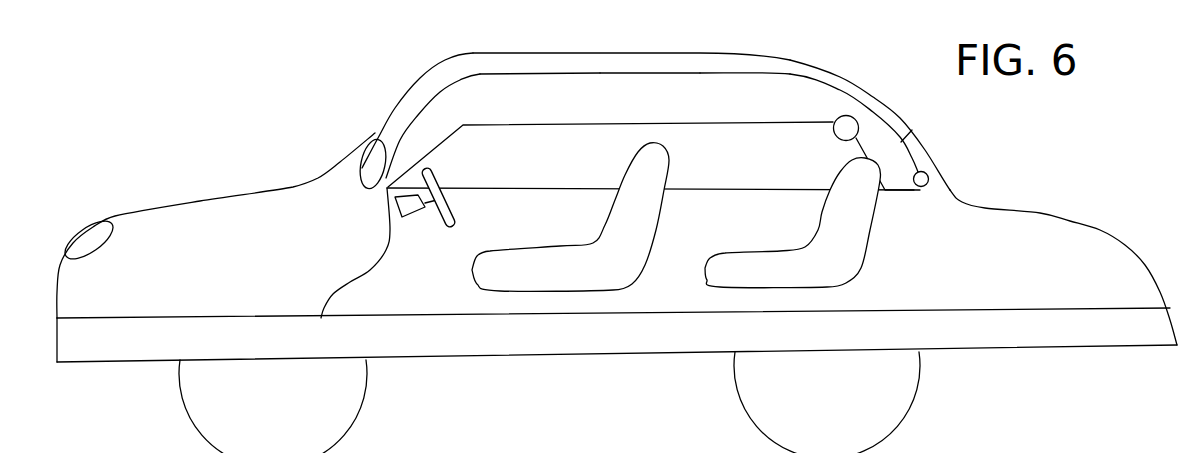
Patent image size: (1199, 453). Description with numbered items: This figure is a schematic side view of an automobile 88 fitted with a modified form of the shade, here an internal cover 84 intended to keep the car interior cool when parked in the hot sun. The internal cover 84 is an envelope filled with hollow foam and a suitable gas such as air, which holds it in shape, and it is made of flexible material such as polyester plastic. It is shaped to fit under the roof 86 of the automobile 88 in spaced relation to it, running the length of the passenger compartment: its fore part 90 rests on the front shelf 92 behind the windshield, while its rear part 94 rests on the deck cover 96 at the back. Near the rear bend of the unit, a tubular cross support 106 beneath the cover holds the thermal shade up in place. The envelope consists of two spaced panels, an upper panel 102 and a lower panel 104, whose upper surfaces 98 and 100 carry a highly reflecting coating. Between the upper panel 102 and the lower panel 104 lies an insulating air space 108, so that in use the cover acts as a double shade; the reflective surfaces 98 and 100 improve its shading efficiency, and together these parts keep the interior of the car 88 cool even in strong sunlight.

The internal cover 84 is at (715, 63).
The roof 86 is at (792, 60).
The automobile 88 is at (312, 183).
The fore part 90 is at (416, 103).
The front shelf 92 is at (378, 146).
The rear part 94 is at (907, 136).
The deck cover 96 is at (934, 170).
The upper surface 98 is at (613, 70).
The upper surface 100 is at (660, 120).
The upper panel 102 is at (563, 70).
The lower panel 104 is at (803, 120).
The tubular cross support 106 is at (860, 122).
The insulating air space 108 is at (487, 90).